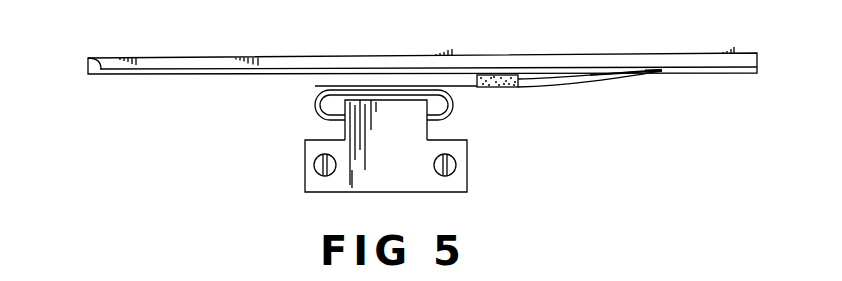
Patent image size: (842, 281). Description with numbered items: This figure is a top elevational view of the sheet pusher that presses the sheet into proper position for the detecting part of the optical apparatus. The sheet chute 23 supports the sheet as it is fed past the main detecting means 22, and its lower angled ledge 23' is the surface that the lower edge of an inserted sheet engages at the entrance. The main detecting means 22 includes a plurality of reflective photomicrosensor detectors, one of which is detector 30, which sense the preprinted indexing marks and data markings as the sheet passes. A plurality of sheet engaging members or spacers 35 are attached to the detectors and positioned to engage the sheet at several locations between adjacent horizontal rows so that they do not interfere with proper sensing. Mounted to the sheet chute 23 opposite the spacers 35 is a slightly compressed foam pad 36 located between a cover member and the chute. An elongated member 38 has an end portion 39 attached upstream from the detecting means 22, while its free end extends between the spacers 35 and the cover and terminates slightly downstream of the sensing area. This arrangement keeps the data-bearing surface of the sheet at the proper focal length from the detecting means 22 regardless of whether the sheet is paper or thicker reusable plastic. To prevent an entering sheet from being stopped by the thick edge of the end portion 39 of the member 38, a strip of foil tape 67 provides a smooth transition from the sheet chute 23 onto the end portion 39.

The main detecting means 22 is at (467, 167).
The sheet chute 23 is at (422, 49).
The lower angled ledge 23' is at (71, 51).
The detector 30 is at (405, 156).
The spacers 35 is at (454, 111).
The foam pad 36 is at (498, 75).
The elongated member 38 is at (563, 87).
The end portion 39 is at (622, 72).
The foil tape 67 is at (659, 73).